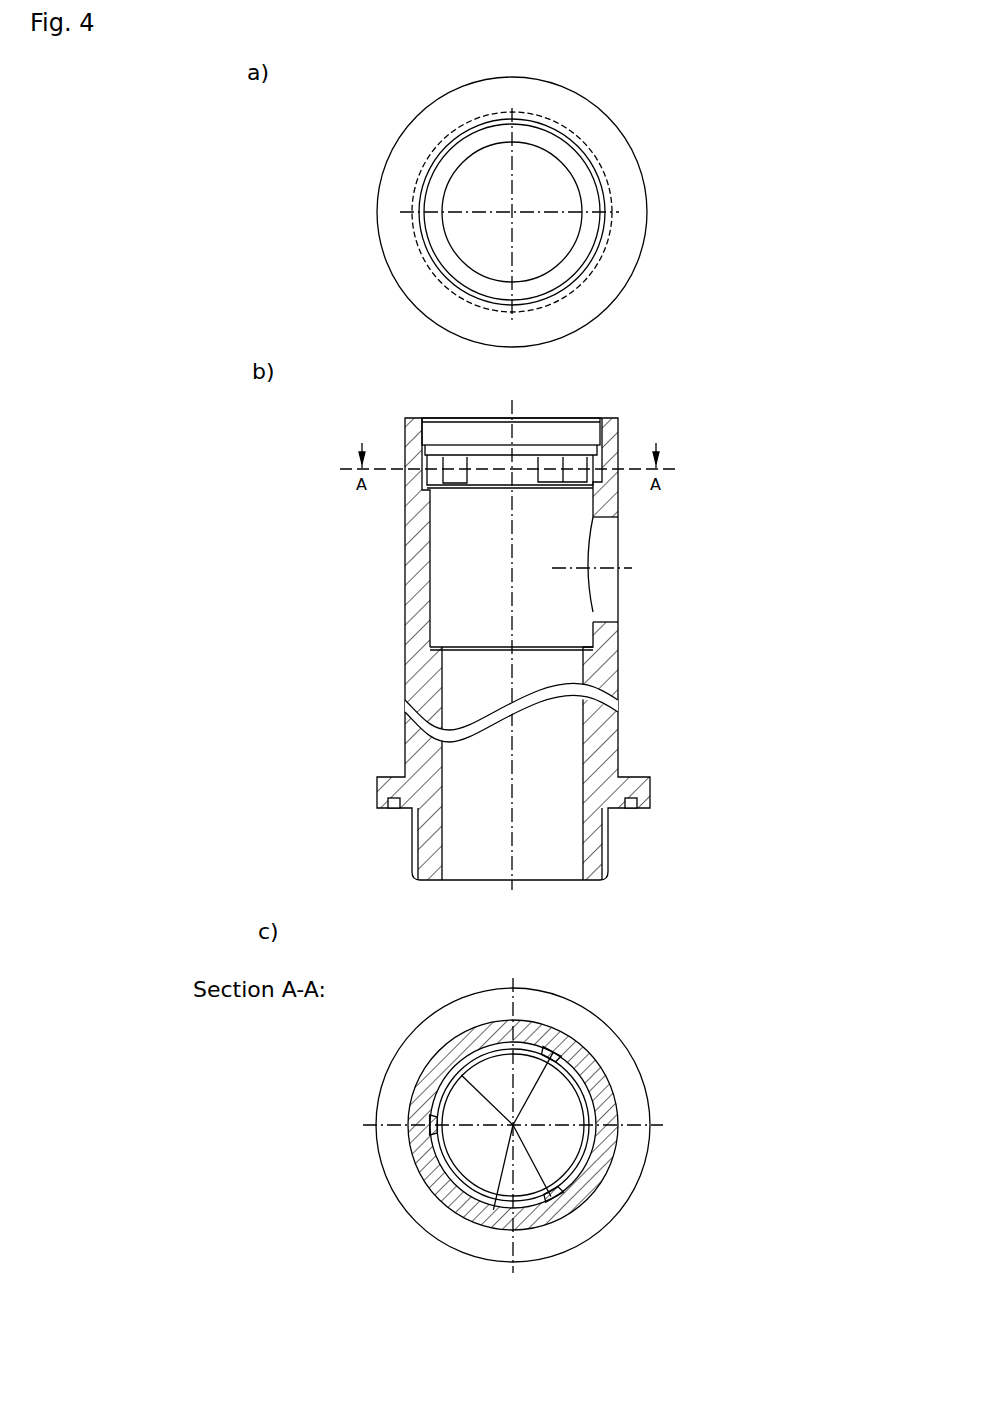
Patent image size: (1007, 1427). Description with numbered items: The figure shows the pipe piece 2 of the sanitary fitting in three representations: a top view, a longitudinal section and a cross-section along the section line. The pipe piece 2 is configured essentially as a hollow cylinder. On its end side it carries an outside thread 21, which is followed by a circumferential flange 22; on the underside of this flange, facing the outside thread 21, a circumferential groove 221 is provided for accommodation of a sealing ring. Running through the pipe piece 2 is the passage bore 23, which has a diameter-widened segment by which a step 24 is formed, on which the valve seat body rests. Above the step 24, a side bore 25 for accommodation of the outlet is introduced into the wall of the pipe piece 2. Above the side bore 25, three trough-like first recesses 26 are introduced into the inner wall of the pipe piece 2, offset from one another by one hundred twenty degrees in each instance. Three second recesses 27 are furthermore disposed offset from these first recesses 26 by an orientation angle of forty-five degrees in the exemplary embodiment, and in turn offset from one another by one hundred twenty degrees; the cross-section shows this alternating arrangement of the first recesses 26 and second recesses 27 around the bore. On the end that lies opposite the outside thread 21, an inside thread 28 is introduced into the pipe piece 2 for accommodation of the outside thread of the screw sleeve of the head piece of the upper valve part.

The pipe piece 2 is at (733, 438).
The outside thread 21 is at (412, 848).
The circumferential flange 22 is at (622, 180).
The circumferential groove 221 is at (631, 808).
The passage bore 23 is at (530, 853).
The step 24 is at (440, 647).
The side bore 25 is at (603, 603).
The first recesses 26 is at (590, 472).
The second recesses 27 is at (547, 470).
The inside thread 28 is at (592, 250).